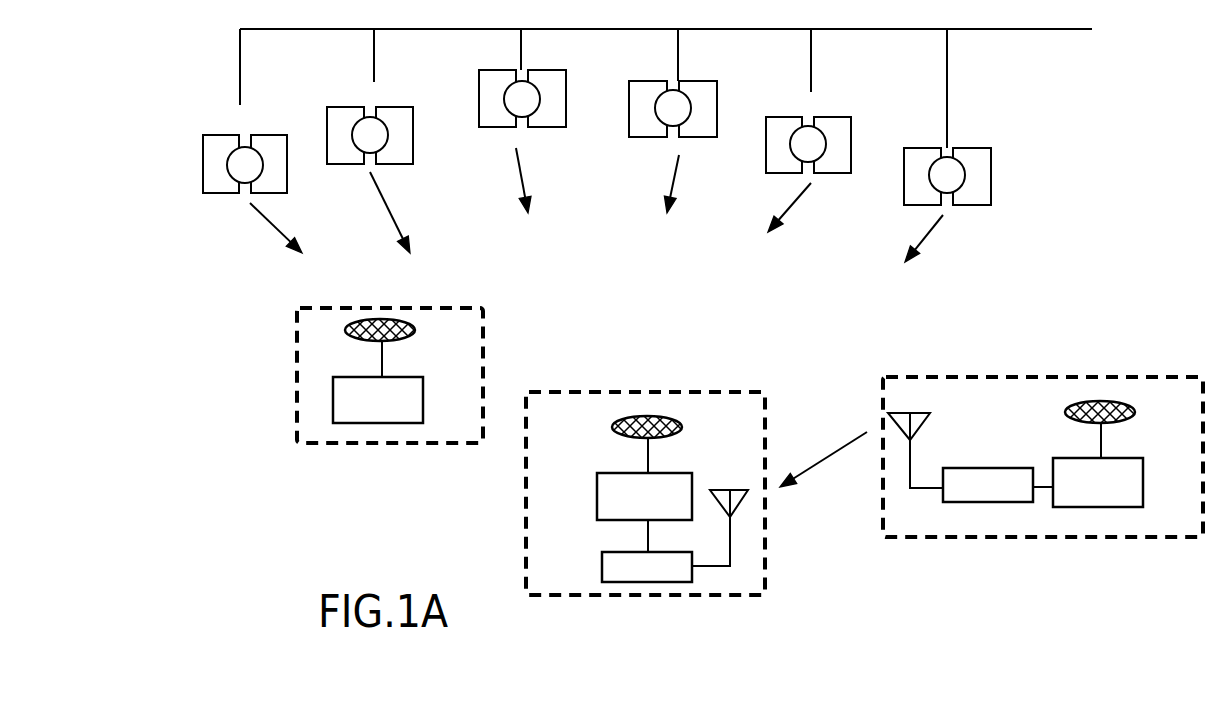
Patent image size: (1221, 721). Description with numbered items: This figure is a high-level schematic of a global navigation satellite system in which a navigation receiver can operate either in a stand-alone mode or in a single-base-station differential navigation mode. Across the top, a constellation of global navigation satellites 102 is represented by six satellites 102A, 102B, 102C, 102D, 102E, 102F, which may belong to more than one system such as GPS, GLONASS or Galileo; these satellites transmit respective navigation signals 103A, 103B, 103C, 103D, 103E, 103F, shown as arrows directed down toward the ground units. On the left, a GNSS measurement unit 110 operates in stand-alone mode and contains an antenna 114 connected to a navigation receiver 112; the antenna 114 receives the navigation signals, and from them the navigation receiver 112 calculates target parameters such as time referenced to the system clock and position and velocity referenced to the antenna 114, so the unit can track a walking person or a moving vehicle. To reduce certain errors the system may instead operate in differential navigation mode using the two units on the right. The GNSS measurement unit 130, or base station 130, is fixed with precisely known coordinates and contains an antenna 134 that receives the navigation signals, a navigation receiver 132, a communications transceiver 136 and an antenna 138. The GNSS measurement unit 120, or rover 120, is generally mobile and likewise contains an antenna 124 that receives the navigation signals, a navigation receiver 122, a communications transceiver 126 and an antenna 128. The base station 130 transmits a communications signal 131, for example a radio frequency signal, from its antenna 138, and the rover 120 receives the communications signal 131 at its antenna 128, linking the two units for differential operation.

The constellation of global navigation satellites 102 is at (666, 50).
The navigation satellite 102A is at (245, 111).
The navigation satellite 102B is at (370, 96).
The navigation satellite 102C is at (522, 78).
The navigation satellite 102D is at (673, 83).
The navigation satellite 102E is at (808, 101).
The navigation satellite 102F is at (947, 117).
The navigation signal 103A is at (257, 231).
The navigation signal 103B is at (415, 212).
The navigation signal 103C is at (551, 180).
The navigation signal 103D is at (701, 184).
The navigation signal 103E is at (814, 207).
The navigation signal 103F is at (948, 238).
The GNSS measurement unit 110 is at (360, 375).
The navigation receiver 112 is at (402, 400).
The antenna 114 is at (408, 348).
The rover 120 is at (645, 475).
The navigation receiver 122 is at (615, 512).
The antenna 124 is at (610, 444).
The communications transceiver 126 is at (615, 567).
The antenna 128 is at (722, 508).
The base station 130 is at (1043, 441).
The communications signal 131 is at (823, 452).
The navigation receiver 132 is at (1121, 482).
The antenna 134 is at (1122, 429).
The communications transceiver 136 is at (998, 472).
The antenna 138 is at (914, 438).